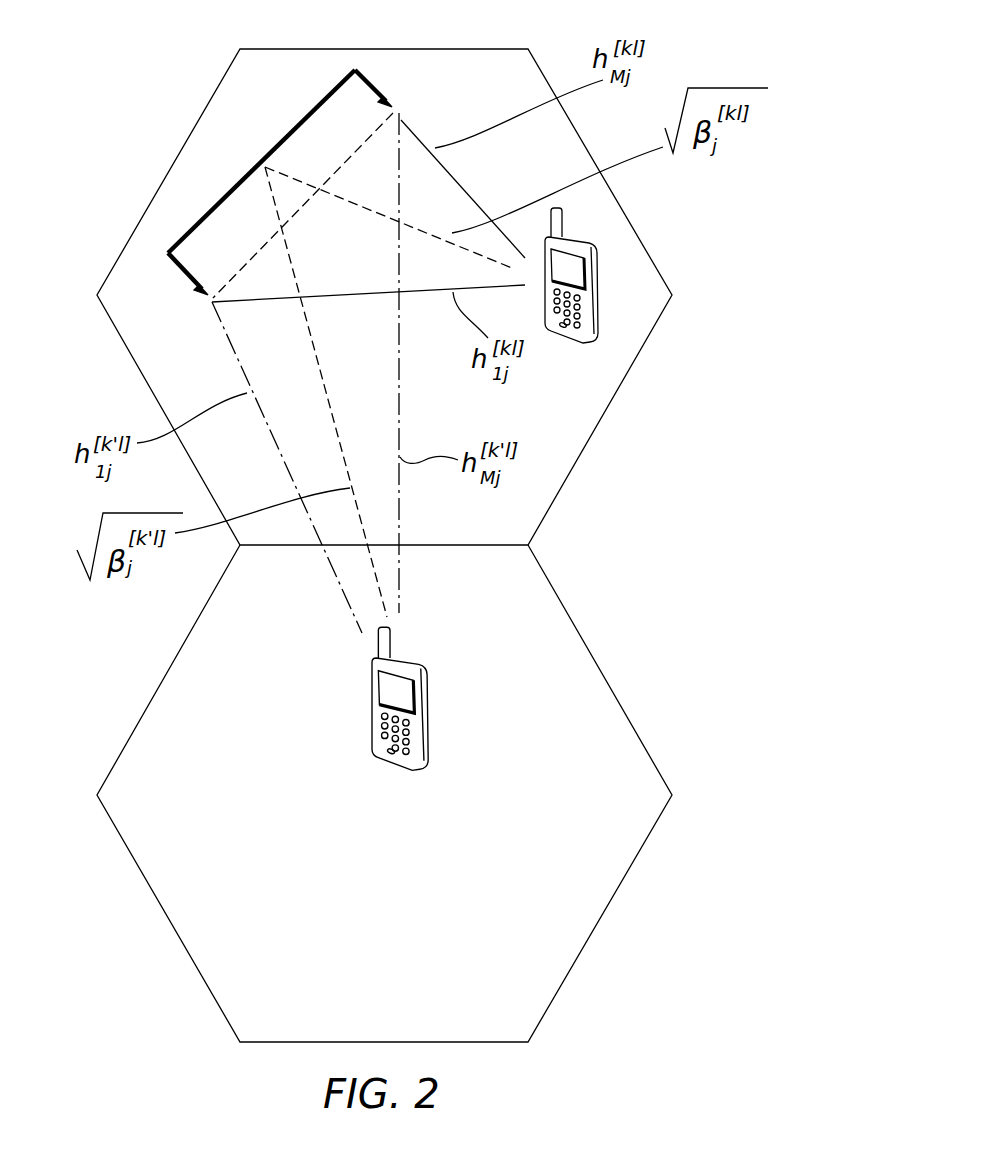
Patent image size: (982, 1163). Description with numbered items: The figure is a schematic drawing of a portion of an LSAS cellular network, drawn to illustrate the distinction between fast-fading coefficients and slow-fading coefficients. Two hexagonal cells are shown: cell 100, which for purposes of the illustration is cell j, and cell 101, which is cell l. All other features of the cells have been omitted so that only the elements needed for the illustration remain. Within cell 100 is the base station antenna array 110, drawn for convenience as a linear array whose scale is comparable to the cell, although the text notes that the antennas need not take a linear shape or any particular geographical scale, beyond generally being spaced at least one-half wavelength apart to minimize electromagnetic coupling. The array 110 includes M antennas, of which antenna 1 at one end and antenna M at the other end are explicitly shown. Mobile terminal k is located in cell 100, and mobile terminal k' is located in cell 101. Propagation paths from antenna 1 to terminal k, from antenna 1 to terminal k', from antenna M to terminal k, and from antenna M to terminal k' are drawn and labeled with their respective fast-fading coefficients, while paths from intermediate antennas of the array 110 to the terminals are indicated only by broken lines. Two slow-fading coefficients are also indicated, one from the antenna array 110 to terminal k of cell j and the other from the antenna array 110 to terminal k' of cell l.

The cell 100 is at (645, 243).
The cell 101 is at (585, 640).
The base station antenna array 110 is at (244, 175).
The antenna 1 is at (182, 272).
The antenna M is at (375, 82).
The mobile terminal k is at (595, 275).
The mobile terminal k' is at (427, 698).
The cell j is at (521, 508).
The cell l is at (523, 1016).